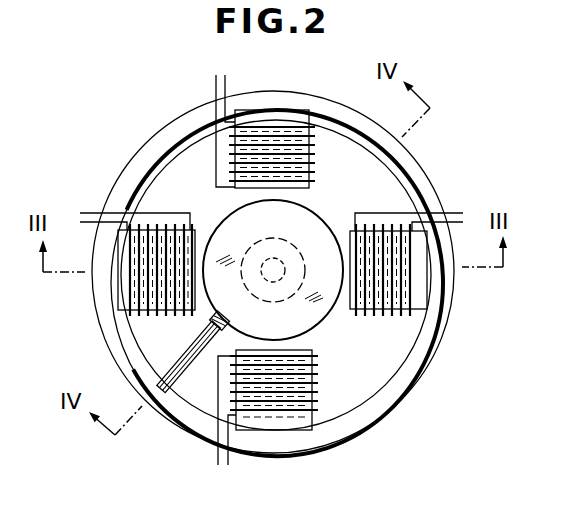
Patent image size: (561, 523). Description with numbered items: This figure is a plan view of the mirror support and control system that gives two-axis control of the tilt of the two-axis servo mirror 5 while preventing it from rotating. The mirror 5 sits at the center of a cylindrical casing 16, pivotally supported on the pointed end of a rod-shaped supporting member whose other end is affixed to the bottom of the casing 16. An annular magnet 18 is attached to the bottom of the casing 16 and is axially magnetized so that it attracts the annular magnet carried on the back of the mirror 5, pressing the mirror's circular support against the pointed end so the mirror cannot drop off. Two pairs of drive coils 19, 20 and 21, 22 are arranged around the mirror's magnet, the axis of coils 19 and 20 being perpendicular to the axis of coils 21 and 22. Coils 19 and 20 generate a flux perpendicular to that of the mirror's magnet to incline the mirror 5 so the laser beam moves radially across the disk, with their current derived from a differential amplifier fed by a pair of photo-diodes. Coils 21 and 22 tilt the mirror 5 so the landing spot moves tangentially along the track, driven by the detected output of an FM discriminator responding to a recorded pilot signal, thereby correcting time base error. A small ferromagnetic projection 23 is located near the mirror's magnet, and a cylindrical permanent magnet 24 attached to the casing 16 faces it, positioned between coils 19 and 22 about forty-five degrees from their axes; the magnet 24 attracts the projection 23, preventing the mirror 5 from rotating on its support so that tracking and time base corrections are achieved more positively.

The two-axis servo mirror 5 is at (300, 226).
The cylindrical casing 16 is at (398, 386).
The annular magnet 18 is at (383, 337).
The drive coil 19 is at (135, 284).
The drive coil 20 is at (410, 284).
The drive coil 21 is at (270, 130).
The drive coil 22 is at (282, 390).
The projection 23 is at (230, 313).
The cylindrical permanent magnet 24 is at (196, 337).